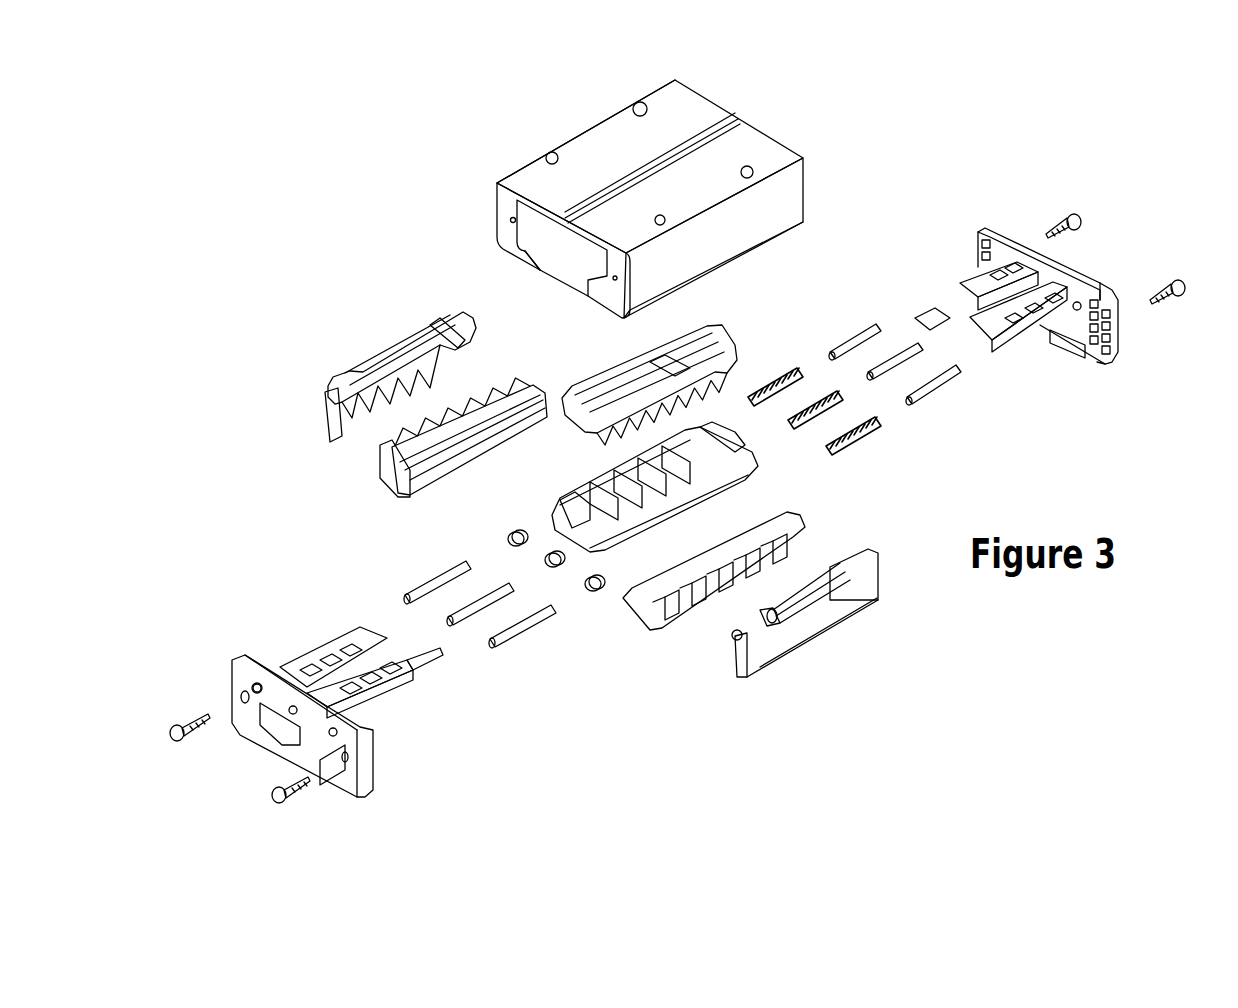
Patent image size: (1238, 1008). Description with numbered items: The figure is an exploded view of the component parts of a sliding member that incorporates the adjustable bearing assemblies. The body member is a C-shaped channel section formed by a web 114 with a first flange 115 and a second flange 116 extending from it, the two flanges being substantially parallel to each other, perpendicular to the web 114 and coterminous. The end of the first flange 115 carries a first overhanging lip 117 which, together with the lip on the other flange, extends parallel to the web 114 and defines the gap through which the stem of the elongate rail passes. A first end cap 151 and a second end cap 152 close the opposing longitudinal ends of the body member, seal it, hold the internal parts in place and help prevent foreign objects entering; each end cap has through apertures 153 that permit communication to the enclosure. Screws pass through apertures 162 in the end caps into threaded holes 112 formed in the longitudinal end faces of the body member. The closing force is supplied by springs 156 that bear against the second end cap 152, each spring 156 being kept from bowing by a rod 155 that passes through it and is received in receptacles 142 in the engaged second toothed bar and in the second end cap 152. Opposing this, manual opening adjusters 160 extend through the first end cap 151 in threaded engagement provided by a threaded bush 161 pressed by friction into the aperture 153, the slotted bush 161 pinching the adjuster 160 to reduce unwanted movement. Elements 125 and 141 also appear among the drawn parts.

The threaded hole 112 is at (510, 217).
The web 114 is at (682, 122).
The first flange 115 is at (493, 193).
The second flange 116 is at (695, 265).
The first overhanging lip 117 is at (592, 290).
The contact carrier sliders 125 is at (593, 512).
The first slider 141 is at (583, 417).
The receptacle 142 is at (478, 317).
The first end cap 151 is at (230, 670).
The second end cap 152 is at (1092, 270).
The aperture 153 is at (258, 690).
The rod 155 is at (957, 380).
The spring 156 is at (870, 435).
The manual opening adjuster 160 is at (510, 630).
The threaded bush 161 is at (597, 588).
The aperture 162 is at (345, 757).